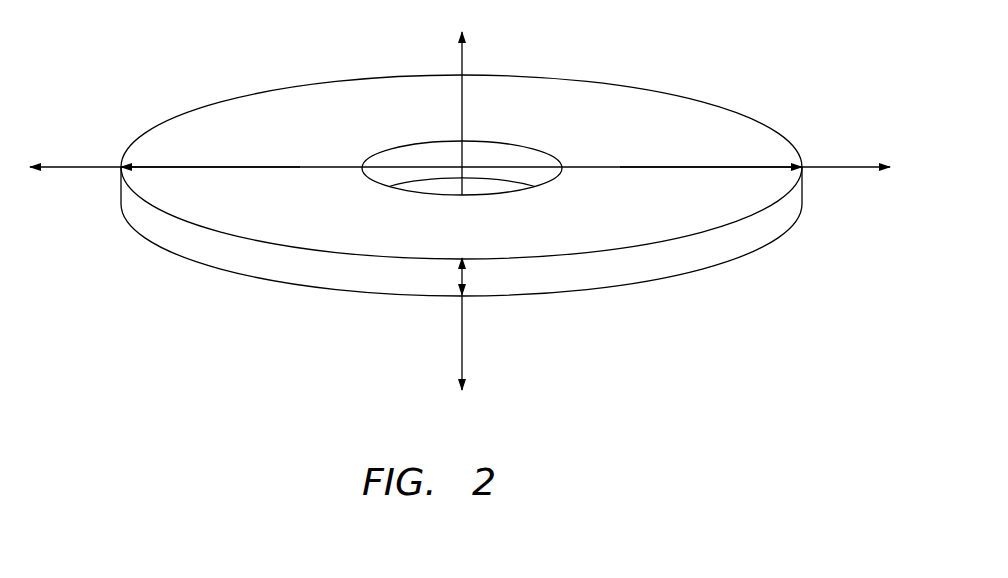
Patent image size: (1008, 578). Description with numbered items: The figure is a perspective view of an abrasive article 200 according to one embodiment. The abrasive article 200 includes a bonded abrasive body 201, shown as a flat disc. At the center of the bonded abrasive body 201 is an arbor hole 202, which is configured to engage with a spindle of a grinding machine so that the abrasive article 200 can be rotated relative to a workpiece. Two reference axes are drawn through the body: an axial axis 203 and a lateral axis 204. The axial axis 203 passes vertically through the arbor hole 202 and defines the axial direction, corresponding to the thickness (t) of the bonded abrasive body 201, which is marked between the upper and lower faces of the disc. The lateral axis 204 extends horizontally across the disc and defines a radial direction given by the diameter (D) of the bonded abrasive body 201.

The abrasive article 200 is at (122, 48).
The bonded abrasive body 201 is at (720, 125).
The arbor hole 202 is at (502, 173).
The axial axis 203 is at (458, 58).
The lateral axis 204 is at (838, 168).